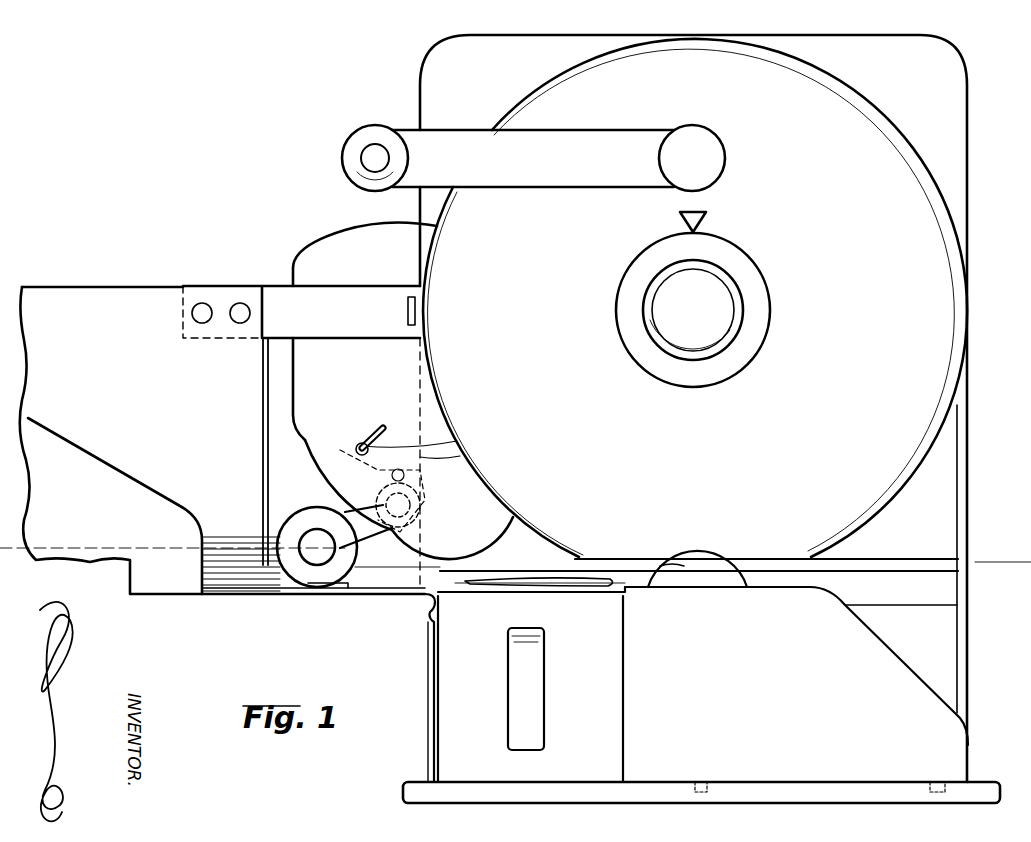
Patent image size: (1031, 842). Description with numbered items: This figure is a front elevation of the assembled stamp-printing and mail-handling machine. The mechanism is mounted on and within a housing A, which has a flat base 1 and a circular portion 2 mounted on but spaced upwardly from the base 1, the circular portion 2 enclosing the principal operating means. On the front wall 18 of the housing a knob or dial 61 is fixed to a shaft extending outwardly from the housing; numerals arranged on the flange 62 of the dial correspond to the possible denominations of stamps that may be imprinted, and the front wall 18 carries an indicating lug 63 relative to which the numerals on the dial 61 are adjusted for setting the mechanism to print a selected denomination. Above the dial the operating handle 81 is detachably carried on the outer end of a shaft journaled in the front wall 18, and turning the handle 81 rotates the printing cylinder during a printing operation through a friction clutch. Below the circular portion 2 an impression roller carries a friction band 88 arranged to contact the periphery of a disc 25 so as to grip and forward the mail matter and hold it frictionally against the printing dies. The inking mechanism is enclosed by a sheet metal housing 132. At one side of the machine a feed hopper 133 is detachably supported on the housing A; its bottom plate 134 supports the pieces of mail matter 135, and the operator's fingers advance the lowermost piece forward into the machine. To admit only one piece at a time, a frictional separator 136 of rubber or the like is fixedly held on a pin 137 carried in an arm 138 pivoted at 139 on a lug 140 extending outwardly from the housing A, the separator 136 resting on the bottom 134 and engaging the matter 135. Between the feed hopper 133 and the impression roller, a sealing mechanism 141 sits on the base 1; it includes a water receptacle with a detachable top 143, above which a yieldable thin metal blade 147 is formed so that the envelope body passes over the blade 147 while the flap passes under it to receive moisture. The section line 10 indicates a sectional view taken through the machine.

The housing A is at (880, 104).
The flat base 1 is at (670, 790).
The circular portion 2 is at (963, 318).
The section line 10- 10 is at (12, 520).
The front wall 18 is at (695, 298).
The disc 25 is at (672, 566).
The knob or dial 61 is at (705, 287).
The flange 62 is at (716, 246).
The indicating lug 63 is at (678, 219).
The operating handle 81 is at (506, 165).
The friction band 88 is at (710, 580).
The sheet metal housing 132 is at (321, 341).
The feed hopper 133 is at (222, 440).
The bottom plate 134 is at (412, 594).
The pieces of mail matter 135 is at (241, 566).
The frictional separator 136 is at (304, 528).
The pin 137 is at (318, 567).
The arm 138 is at (358, 520).
The pivot 139 is at (410, 505).
The lug 140 is at (354, 447).
The sealing mechanism 141 is at (531, 684).
The detachable top 143 is at (513, 592).
The yieldable thin metal blade 147 is at (568, 583).